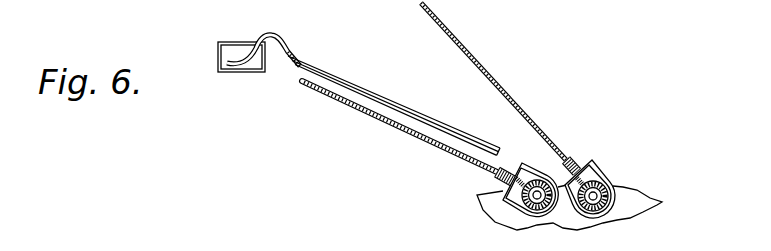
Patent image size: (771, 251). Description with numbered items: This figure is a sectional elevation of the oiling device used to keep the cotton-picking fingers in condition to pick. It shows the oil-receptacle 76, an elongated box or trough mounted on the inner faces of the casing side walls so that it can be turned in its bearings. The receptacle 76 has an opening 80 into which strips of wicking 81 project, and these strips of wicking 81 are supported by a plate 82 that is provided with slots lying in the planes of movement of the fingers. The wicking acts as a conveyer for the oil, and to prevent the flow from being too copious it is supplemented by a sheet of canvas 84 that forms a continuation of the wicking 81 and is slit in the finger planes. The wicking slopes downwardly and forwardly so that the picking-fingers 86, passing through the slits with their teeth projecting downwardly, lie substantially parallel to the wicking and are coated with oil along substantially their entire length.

The oil-receptacle 76 is at (220, 48).
The opening 80 is at (261, 43).
The plate 82 is at (324, 80).
The strips of wicking 81 is at (357, 87).
The sheet of canvas 84 is at (461, 136).
The picking-fingers 86 is at (433, 150).